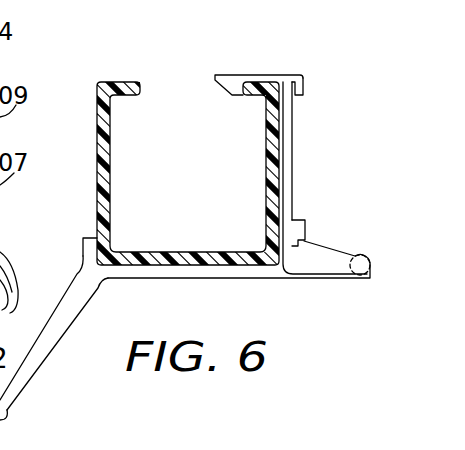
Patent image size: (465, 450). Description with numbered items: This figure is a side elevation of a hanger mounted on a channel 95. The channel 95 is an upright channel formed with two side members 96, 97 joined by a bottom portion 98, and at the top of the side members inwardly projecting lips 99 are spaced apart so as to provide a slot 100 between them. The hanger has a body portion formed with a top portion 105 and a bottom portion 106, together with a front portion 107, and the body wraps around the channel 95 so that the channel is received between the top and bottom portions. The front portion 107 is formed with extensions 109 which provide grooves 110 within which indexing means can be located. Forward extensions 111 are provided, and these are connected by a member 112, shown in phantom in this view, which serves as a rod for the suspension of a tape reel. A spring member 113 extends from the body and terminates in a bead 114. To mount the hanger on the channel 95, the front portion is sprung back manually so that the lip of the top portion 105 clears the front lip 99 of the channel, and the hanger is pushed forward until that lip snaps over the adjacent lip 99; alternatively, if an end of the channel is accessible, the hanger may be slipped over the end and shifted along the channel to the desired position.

The channel 95 is at (86, 158).
The side member 96 is at (111, 138).
The side member 97 is at (266, 143).
The bottom portion 98 is at (193, 210).
The inwardly projecting lip 99 is at (123, 82).
The slot 100 is at (147, 92).
The top portion 105 is at (258, 73).
The bottom portion 106 is at (185, 278).
The front portion 107 is at (292, 168).
The extension 109 is at (304, 88).
The groove 110 is at (296, 219).
The forward extension 111 is at (308, 263).
The member 112 is at (365, 256).
The spring member 113 is at (70, 338).
The bead 114 is at (5, 418).